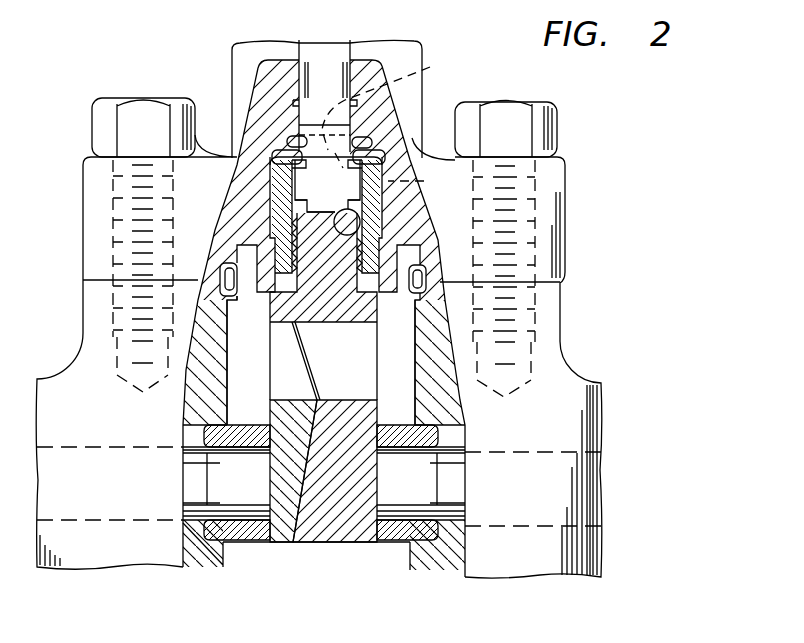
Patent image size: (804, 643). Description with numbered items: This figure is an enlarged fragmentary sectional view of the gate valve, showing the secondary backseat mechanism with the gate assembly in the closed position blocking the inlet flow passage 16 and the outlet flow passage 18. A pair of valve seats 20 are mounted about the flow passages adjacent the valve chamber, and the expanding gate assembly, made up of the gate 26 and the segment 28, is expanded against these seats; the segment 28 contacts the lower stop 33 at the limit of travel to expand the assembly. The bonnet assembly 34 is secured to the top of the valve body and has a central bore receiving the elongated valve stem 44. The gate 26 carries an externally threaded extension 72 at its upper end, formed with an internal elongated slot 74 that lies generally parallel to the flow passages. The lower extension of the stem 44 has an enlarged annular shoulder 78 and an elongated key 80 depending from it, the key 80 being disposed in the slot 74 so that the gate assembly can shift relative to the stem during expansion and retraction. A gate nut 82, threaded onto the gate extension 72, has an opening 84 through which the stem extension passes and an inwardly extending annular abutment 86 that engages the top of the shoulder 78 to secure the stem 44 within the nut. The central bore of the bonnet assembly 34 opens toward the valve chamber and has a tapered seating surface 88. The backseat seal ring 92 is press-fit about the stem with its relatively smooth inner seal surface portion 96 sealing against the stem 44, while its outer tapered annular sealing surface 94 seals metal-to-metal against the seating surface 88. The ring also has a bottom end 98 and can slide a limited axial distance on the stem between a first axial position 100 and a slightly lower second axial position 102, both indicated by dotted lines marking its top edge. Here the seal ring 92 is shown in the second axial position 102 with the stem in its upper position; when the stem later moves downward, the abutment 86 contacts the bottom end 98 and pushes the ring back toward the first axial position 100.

The inlet flow passage 16 is at (100, 485).
The outlet flow passage 18 is at (532, 491).
The valve seats 20 is at (211, 436).
The gate 26 is at (348, 530).
The segment 28 is at (273, 320).
The lower stop 33 is at (240, 296).
The bonnet assembly 34 is at (97, 195).
The valve stem 44 is at (333, 67).
The gate extension 72 is at (323, 258).
The elongated slot 74 is at (345, 235).
The annular shoulder 78 is at (347, 206).
The key 80 is at (305, 209).
The gate nut 82 is at (360, 208).
The opening 84 is at (305, 178).
The annular abutment 86 is at (310, 170).
The tapered seating surface 88 is at (306, 62).
The backseat seal ring 92 is at (365, 142).
The outer tapered annular sealing surface 94 is at (290, 140).
The inner seal surface portion 96 is at (274, 157).
The bottom end 98 is at (370, 157).
The first axial position 100 is at (399, 109).
The second axial position 102 is at (428, 182).